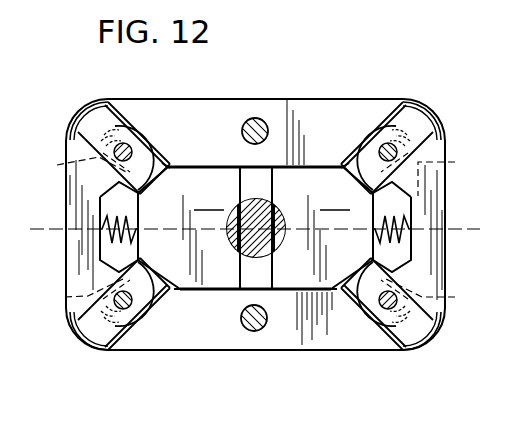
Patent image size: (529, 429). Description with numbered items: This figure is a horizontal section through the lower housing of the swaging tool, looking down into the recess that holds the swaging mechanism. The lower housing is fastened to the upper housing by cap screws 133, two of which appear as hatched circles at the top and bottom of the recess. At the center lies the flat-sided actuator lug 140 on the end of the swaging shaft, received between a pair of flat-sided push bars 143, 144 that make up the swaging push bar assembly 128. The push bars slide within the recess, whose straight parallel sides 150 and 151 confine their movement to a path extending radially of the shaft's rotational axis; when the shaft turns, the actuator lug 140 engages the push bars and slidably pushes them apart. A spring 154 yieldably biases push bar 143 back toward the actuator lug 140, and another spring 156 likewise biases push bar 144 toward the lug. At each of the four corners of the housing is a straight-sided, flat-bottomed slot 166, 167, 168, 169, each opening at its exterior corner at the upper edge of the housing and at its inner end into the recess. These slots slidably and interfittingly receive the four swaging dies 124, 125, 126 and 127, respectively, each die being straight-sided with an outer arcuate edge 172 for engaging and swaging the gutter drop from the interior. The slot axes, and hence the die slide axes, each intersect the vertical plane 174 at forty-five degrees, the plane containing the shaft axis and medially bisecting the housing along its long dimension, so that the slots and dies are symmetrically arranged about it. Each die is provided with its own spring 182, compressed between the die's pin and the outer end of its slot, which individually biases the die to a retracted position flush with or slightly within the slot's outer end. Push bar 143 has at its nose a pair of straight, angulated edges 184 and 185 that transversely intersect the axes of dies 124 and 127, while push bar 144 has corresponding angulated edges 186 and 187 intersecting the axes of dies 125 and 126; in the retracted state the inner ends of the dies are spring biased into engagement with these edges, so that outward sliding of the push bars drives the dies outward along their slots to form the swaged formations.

The swaging die 124 is at (133, 118).
The swaging die 125 is at (377, 118).
The swaging die 126 is at (380, 333).
The swaging die 127 is at (130, 333).
The swaging push bar assembly 128 is at (291, 305).
The cap screw 133 is at (258, 119).
The actuator lug 140 is at (234, 258).
The push bar 143 is at (189, 228).
The push bar 144 is at (322, 228).
The straight parallel side of recess 150 is at (204, 178).
The straight parallel side of recess 151 is at (268, 293).
The spring 154 is at (100, 254).
The spring 156 is at (408, 200).
The die-receiving slot 166 is at (88, 106).
The die-receiving slot 167 is at (400, 111).
The die-receiving slot 168 is at (410, 347).
The die-receiving slot 169 is at (98, 346).
The outer arcuate edge 172 is at (90, 112).
The vertical plane 174 is at (448, 229).
The spring 182 is at (258, 232).
The angulated edge 184 is at (167, 164).
The angulated edge 185 is at (178, 291).
The angulated edge 186 is at (340, 166).
The angulated edge 187 is at (333, 292).